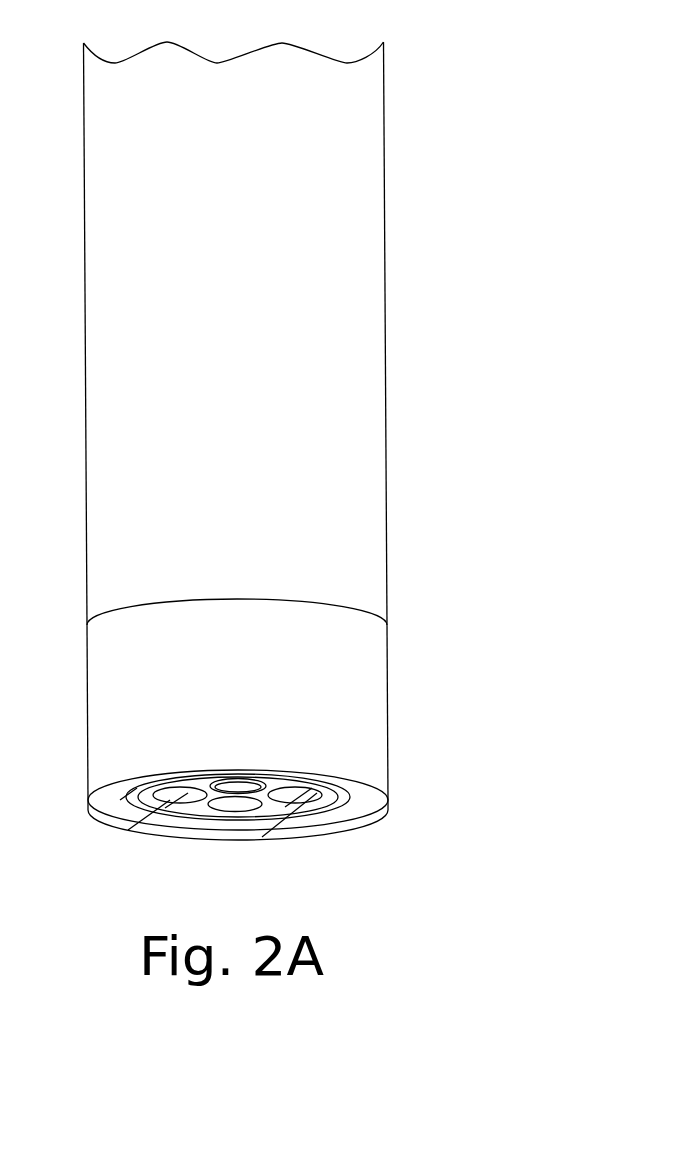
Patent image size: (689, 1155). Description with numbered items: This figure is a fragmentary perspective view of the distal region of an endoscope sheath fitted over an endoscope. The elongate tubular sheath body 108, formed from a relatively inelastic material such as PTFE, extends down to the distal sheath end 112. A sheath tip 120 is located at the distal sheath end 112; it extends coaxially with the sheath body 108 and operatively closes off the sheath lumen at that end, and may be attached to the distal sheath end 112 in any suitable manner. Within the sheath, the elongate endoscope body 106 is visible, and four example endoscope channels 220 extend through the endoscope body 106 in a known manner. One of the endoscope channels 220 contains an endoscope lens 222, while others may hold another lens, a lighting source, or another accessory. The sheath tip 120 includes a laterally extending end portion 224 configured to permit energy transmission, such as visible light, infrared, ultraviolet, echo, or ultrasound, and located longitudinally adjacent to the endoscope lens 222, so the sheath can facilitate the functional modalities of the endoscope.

The sheath body 108 is at (442, 136).
The distal sheath end 112 is at (435, 661).
The sheath tip 120 is at (367, 725).
The endoscope body 106 is at (117, 798).
The laterally extending end portion 224 is at (383, 806).
The endoscope channels 220 is at (158, 798).
The endoscope lens 222 is at (243, 788).